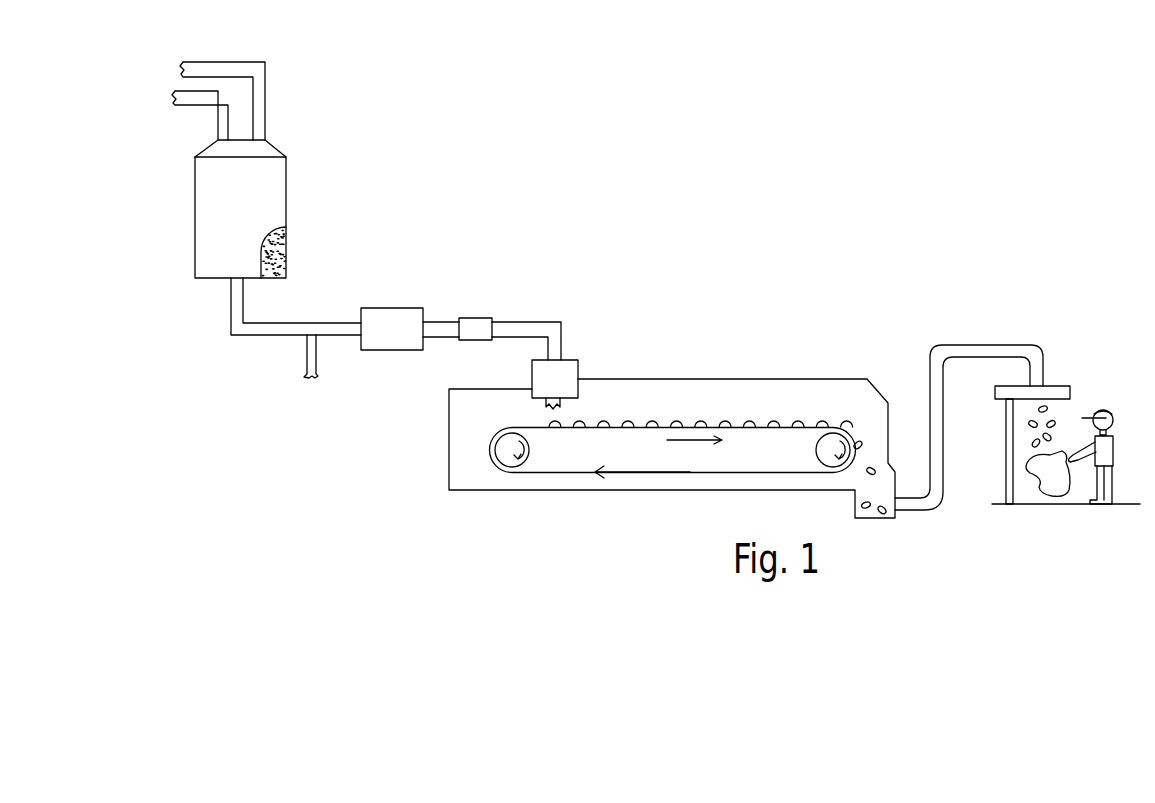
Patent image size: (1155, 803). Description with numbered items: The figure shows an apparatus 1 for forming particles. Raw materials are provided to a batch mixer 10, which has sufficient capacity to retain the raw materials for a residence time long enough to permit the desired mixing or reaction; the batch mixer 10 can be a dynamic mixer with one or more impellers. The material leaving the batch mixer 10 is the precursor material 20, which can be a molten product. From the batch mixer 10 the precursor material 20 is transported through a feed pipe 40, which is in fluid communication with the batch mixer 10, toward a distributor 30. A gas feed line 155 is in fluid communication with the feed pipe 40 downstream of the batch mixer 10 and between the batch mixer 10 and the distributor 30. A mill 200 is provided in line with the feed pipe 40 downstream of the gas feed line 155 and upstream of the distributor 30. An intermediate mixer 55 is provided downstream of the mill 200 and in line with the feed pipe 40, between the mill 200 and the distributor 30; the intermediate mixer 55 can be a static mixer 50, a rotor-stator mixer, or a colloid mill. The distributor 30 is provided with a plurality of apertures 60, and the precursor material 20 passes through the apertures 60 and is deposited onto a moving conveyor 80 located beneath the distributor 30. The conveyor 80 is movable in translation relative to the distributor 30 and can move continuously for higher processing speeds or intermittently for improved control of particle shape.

The apparatus 1 is at (705, 297).
The batch mixer 10 is at (253, 203).
The precursor material 20 is at (276, 250).
The distributor 30 is at (563, 368).
The feed pipe 40 is at (280, 330).
The static mixer 50 is at (483, 320).
The intermediate mixer 55 is at (473, 327).
The apertures 60 is at (555, 408).
The conveyor 80 is at (553, 422).
The gas feed line 155 is at (303, 362).
The mill 200 is at (408, 322).